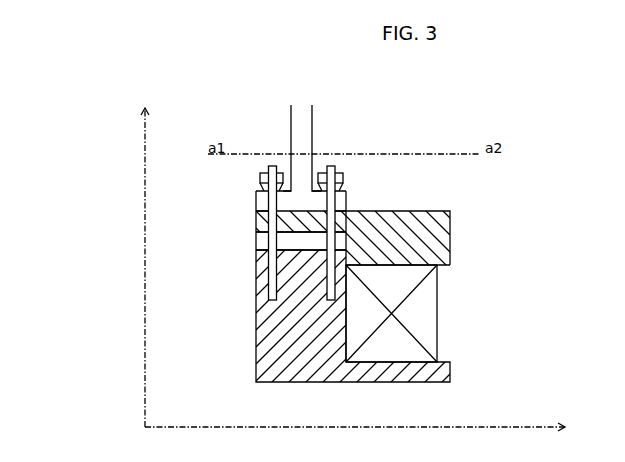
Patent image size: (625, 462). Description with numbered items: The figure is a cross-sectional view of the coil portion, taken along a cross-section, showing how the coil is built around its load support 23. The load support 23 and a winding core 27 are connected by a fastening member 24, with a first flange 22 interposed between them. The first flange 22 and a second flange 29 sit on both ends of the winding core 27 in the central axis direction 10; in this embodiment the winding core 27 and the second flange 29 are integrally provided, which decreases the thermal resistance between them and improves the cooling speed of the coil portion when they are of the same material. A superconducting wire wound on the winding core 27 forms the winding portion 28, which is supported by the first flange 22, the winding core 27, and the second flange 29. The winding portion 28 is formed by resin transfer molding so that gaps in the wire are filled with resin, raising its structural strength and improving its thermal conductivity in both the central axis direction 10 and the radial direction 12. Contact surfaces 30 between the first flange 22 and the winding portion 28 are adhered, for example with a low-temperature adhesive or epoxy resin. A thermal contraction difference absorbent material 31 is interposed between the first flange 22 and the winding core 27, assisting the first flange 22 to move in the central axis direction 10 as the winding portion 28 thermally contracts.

The central axis direction 10 is at (135, 255).
The radial direction 12 is at (371, 426).
The first flange 22 is at (425, 223).
The load support 23 is at (302, 137).
The fastening member 24 is at (270, 208).
The winding core 27 is at (270, 320).
The winding portion 28 is at (425, 312).
The second flange 29 is at (395, 375).
The contact surfaces 30 is at (395, 265).
The thermal contraction difference absorbent material 31 is at (263, 245).